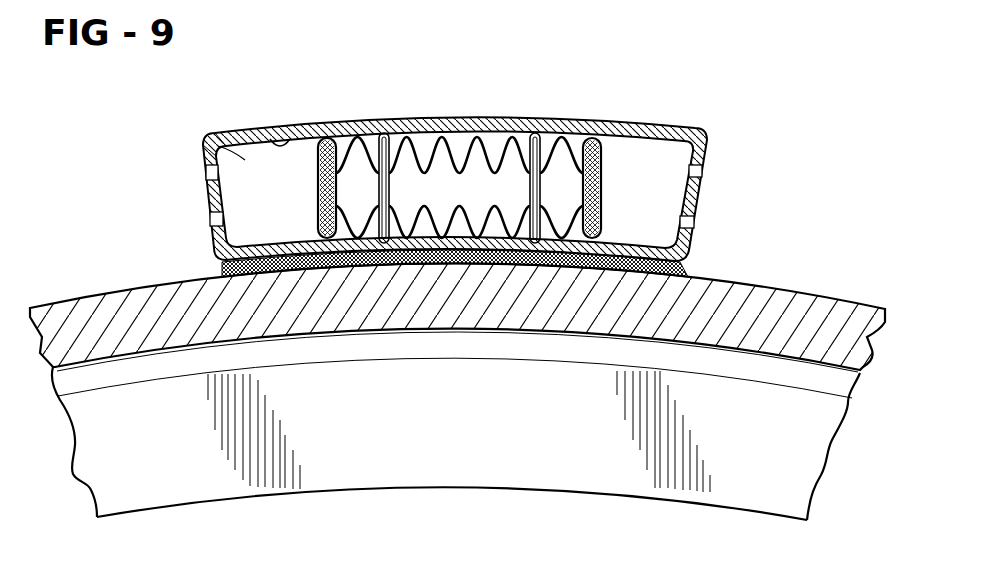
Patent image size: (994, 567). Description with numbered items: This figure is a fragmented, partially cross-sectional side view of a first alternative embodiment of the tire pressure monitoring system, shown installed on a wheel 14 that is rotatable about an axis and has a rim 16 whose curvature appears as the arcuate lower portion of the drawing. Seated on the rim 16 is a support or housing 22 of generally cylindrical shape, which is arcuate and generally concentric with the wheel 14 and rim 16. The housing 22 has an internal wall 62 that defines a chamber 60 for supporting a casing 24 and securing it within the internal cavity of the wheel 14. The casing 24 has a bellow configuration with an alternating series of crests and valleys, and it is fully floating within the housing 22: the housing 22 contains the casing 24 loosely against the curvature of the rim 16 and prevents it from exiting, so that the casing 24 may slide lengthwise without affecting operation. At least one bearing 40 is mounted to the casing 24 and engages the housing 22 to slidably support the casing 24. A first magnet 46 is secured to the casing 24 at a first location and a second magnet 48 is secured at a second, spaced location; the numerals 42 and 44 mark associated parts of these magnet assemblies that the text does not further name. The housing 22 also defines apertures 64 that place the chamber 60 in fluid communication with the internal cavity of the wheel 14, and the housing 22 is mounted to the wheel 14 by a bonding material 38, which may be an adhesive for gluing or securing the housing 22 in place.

The wheel 14 is at (59, 456).
The rim 16 is at (65, 332).
The housing 22 is at (257, 131).
The casing 24 is at (478, 172).
The bonding material 38 is at (688, 266).
The bearing 40 is at (384, 130).
The left mesh ring body 42 is at (318, 214).
The right ring 44 is at (601, 182).
The first magnet 46 is at (318, 175).
The second magnet 48 is at (596, 222).
The chamber 60 is at (207, 133).
The internal wall 62 is at (293, 138).
The apertures 64 is at (210, 218).